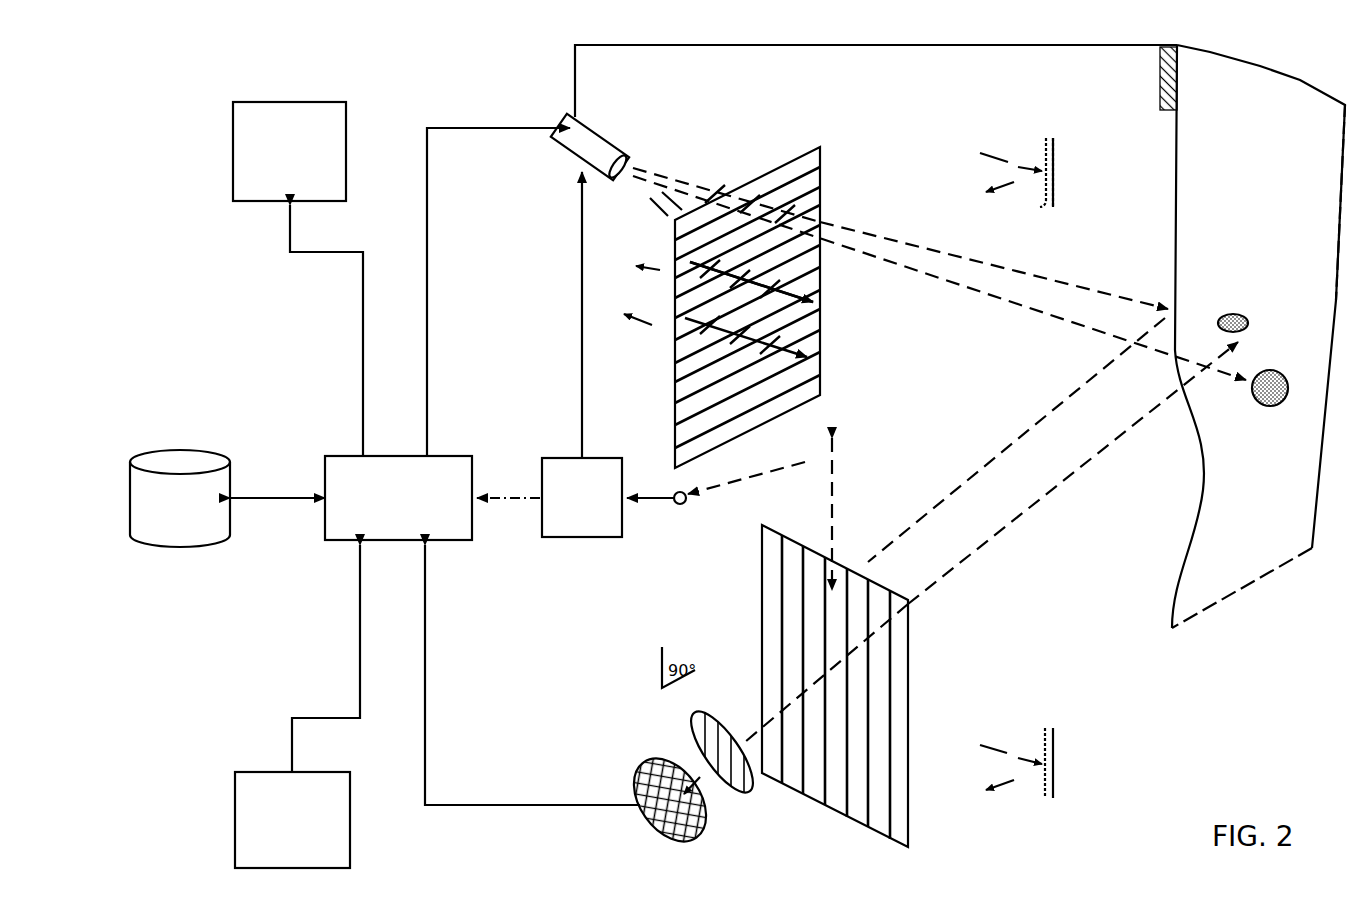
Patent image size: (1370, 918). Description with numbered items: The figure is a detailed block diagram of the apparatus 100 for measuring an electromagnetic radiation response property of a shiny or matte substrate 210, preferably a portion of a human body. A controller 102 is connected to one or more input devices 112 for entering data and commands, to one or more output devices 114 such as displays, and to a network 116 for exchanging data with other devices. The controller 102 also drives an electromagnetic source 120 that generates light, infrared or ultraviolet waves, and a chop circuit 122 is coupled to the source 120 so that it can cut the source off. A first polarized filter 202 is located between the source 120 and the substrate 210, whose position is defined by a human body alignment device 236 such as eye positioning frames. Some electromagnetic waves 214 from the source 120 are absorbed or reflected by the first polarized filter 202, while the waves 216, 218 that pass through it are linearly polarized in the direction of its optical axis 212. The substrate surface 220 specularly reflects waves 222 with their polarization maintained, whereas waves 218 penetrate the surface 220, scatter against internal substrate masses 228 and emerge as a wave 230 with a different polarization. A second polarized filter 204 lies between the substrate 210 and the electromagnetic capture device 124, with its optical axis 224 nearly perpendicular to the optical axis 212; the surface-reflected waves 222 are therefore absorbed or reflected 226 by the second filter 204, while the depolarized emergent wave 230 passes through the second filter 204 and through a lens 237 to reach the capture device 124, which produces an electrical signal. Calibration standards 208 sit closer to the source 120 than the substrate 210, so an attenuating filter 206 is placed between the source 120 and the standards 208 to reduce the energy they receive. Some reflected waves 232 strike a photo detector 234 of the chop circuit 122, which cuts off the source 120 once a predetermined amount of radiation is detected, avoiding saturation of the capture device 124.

The apparatus 100 is at (177, 250).
The controller 102 is at (343, 456).
The input device 112 is at (233, 818).
The output device 114 is at (233, 148).
The network 116 is at (180, 448).
The electromagnetic source 120 is at (598, 130).
The chop circuit 122 is at (581, 538).
The electromagnetic capture device 124 is at (650, 768).
The first polarized filter 202 is at (807, 147).
The second polarized filter 204 is at (800, 800).
The attenuating filter 206 is at (1044, 198).
The calibration standard 208 is at (1056, 200).
The substrate 210 is at (1262, 582).
The optical axis of the first polarized filter 212 is at (813, 187).
The electromagnetic waves absorbed or reflected by the first polarized filter 214 is at (673, 213).
The electromagnetic waves passing through the first polarized filter 216 is at (1057, 278).
The electromagnetic waves penetrating the substrate 218 is at (920, 276).
The substrate surface 220 is at (1190, 536).
The reflected electromagnetic waves 222 is at (1028, 424).
The optical axis of the second polarized filter 224 is at (898, 658).
The waves absorbed or reflected by the second polarized filter 226 is at (833, 484).
The internal substrate mass 228 is at (1243, 312).
The emergent wave 230 is at (1090, 447).
The electromagnetic waves striking the photo detector 232 is at (748, 488).
The photo detector 234 is at (684, 492).
The human body alignment device 236 is at (818, 47).
The lens 237 is at (690, 722).